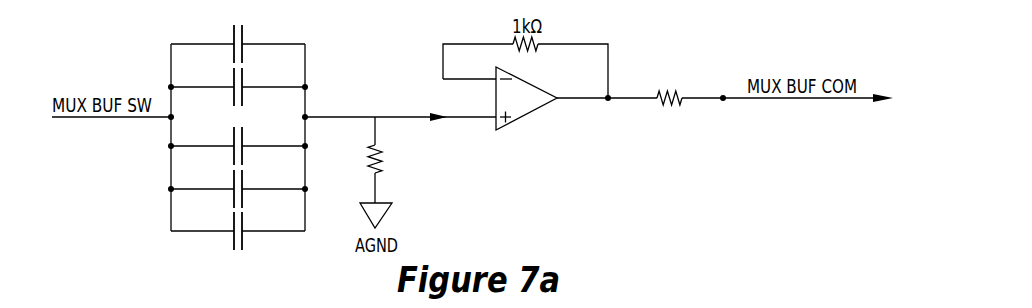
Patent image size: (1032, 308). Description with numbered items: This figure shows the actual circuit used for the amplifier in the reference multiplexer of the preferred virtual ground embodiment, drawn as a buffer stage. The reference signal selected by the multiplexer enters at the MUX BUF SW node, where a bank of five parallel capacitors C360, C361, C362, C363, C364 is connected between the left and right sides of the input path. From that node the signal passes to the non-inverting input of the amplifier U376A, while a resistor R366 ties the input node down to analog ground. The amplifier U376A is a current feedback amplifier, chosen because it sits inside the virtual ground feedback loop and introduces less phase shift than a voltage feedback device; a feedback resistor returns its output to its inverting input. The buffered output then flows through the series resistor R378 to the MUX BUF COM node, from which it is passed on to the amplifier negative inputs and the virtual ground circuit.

The capacitor 10uF C360 is at (238, 42).
The capacitor 10uF C361 is at (238, 85).
The capacitor 10uF C362 is at (238, 144).
The capacitor 10uF C363 is at (238, 187).
The capacitor 10uF C364 is at (238, 229).
The resistor 100k R366 is at (397, 160).
The buffer op-amp LT1229CS8 U376A is at (520, 127).
The resistor 0R 1206 R378 is at (672, 89).